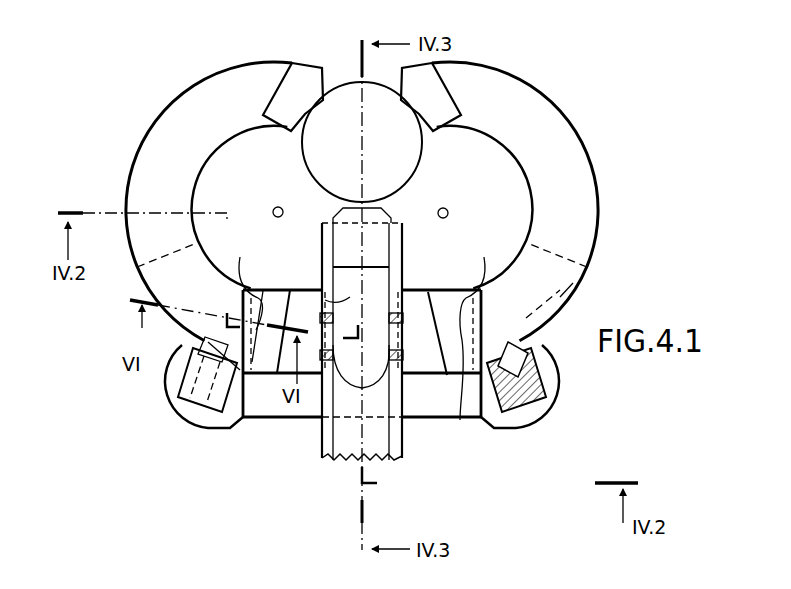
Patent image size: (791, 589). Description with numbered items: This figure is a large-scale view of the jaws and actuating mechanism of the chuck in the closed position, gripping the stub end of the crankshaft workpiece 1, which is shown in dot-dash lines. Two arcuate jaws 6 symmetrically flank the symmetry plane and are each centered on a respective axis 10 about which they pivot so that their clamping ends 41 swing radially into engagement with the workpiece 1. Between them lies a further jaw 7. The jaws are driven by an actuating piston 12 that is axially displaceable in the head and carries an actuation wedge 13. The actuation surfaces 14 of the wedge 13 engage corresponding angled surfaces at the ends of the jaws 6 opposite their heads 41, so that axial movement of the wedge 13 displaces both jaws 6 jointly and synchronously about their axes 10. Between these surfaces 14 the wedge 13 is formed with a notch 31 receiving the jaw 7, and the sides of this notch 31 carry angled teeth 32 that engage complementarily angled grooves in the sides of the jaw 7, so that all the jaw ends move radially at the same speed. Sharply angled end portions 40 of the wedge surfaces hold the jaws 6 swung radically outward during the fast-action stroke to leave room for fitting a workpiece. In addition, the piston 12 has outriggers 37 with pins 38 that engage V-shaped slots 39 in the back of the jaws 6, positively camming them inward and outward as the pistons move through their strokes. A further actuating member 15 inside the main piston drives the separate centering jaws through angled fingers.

The crankshaft workpiece 1 is at (417, 173).
The jaws 6 is at (167, 133).
The jaw 7 is at (383, 277).
The axes 10 is at (277, 207).
The actuating piston 12 is at (428, 405).
The actuation wedge 13 is at (418, 305).
The actuation surfaces 14 is at (248, 290).
The actuating member 15 is at (333, 383).
The notch 31 is at (350, 294).
The angled teeth 32 is at (388, 343).
The outriggers 37 is at (210, 428).
The pins 38 is at (215, 335).
The V-shaped slots 39 is at (226, 420).
The sharply angled end portions 40 is at (278, 307).
The clamping ends 41 is at (300, 92).